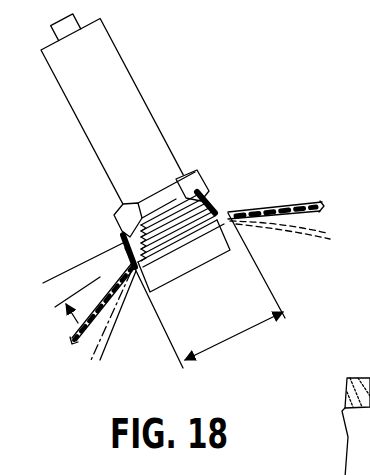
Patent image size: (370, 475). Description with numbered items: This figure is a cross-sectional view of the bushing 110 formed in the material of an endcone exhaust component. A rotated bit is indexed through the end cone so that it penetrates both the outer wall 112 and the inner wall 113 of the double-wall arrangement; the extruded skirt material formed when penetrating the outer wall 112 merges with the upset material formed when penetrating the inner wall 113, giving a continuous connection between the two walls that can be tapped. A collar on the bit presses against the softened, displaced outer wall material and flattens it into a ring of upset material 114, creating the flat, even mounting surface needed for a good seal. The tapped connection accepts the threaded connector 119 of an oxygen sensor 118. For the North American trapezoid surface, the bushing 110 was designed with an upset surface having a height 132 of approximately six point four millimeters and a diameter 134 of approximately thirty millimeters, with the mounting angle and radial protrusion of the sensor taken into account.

The bushing 110 is at (184, 268).
The outer wall 112 is at (283, 205).
The inner wall 113 is at (280, 222).
The ring of upset material 114 is at (214, 188).
The oxygen sensor 118 is at (110, 67).
The threaded connector 119 is at (183, 174).
The height 132 is at (47, 271).
The diameter 134 is at (230, 340).